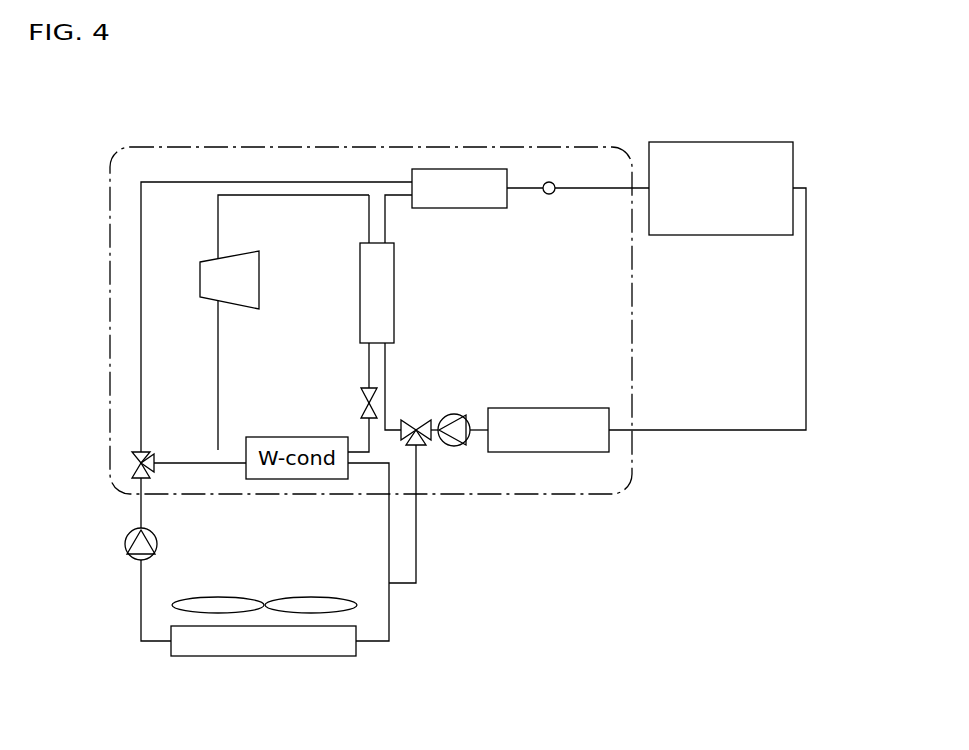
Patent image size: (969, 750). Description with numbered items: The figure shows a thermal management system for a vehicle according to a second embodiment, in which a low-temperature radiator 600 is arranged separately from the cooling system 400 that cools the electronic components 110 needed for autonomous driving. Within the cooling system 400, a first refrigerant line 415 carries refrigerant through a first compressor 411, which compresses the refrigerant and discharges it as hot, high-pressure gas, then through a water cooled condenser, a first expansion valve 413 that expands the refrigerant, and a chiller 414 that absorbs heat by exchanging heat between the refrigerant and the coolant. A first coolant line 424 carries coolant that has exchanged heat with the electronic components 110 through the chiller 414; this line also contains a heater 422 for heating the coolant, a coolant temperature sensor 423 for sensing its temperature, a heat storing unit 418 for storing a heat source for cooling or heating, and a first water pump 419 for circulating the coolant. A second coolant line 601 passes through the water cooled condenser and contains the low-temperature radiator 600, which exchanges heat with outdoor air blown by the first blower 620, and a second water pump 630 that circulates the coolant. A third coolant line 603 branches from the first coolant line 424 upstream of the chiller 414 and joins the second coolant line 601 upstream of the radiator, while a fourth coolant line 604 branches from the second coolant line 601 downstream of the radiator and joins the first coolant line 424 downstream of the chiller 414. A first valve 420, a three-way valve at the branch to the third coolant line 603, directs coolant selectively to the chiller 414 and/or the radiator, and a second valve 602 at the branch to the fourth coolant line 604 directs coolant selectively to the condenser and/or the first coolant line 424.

The electronic components 110 is at (722, 142).
The cooling system 400 is at (272, 147).
The first compressor 411 is at (230, 305).
The first expansion valve 413 is at (361, 396).
The chiller 414 is at (360, 296).
The first refrigerant line 415 is at (293, 196).
The heat storing unit 418 is at (547, 452).
The first water pump 419 is at (450, 447).
The first valve 420 is at (421, 420).
The heater 422 is at (460, 168).
The coolant temperature sensor 423 is at (549, 182).
The first coolant line 424 is at (670, 431).
The low-temperature radiator 600 is at (276, 656).
The second coolant line 601 is at (389, 555).
The second valve 602 is at (131, 460).
The third coolant line 603 is at (418, 562).
The fourth coolant line 604 is at (178, 182).
The first blower 620 is at (218, 597).
The second water pump 630 is at (127, 560).